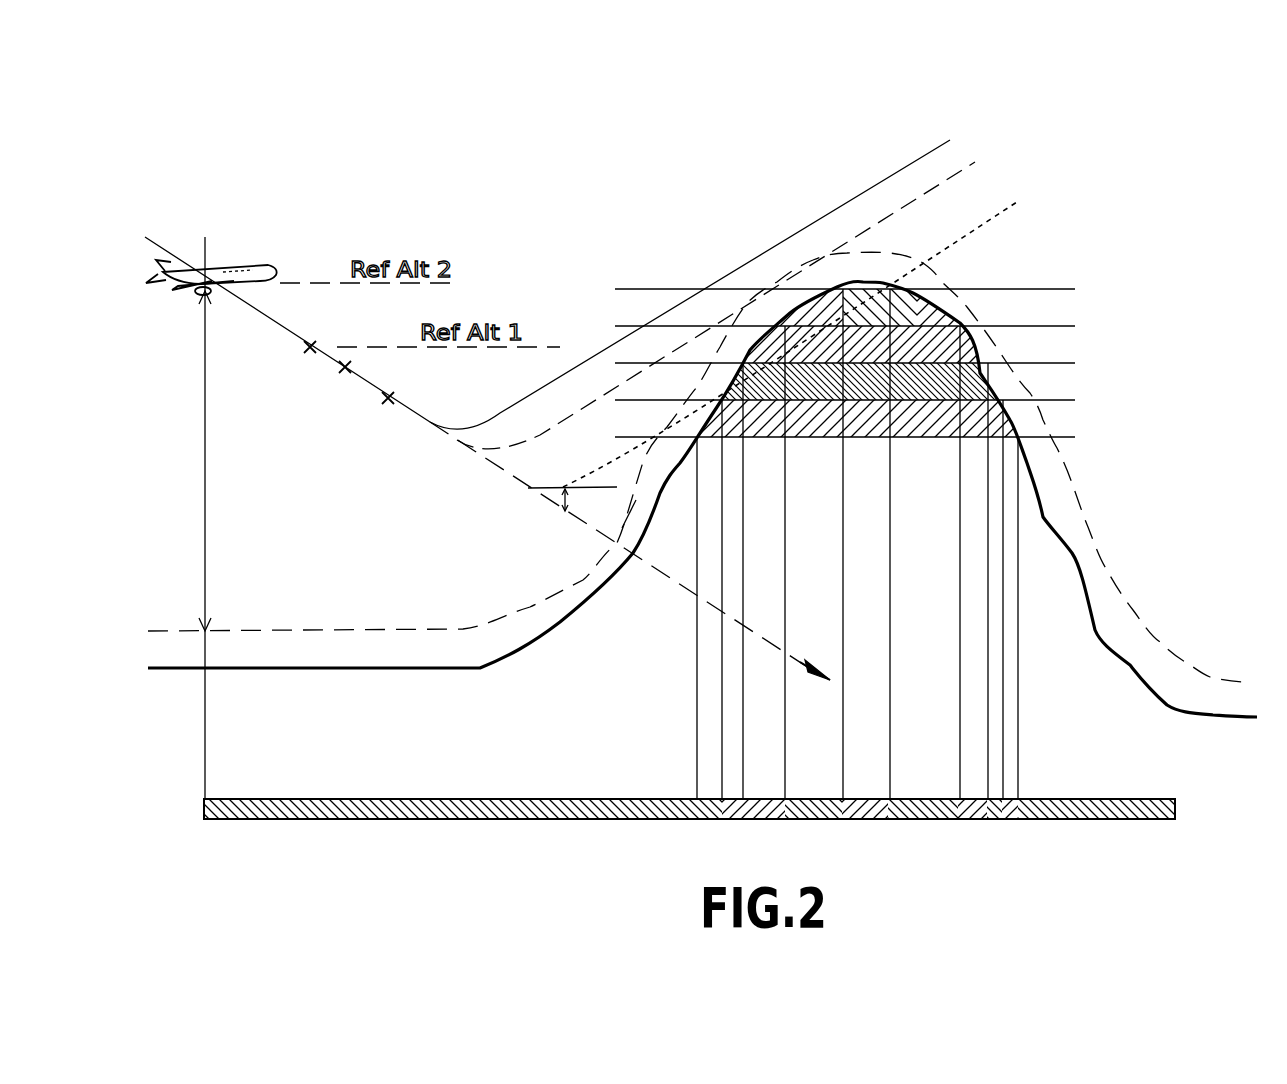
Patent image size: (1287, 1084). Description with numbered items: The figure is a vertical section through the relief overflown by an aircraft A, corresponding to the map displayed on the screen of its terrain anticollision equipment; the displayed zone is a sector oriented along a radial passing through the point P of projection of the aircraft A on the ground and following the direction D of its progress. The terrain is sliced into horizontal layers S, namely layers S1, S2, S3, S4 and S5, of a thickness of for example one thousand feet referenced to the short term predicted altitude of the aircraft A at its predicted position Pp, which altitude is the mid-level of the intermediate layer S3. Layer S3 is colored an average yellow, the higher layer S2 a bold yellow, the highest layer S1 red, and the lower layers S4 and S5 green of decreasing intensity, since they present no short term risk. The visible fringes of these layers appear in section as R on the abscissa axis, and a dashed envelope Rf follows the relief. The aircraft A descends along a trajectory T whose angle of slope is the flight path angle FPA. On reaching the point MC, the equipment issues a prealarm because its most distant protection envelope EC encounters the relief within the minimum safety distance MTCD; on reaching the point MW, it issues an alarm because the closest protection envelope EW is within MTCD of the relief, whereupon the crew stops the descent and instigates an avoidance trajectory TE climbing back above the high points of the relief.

The aircraft A is at (246, 262).
The predicted position Pp is at (311, 343).
The prealarm point MC is at (323, 378).
The alarm point MW is at (363, 408).
The avoidance trajectory TE is at (882, 180).
The closest protection envelope EW is at (944, 183).
The most distant protection envelope EC is at (982, 226).
The trajectory T is at (676, 582).
The direction of progress D is at (813, 656).
The flight path angle FPA is at (582, 507).
The horizontal layers S is at (845, 351).
The horizontal layer S1 is at (849, 532).
The horizontal layer S2 is at (872, 549).
The intermediate horizontal layer S3 is at (865, 566).
The horizontal layer S4 is at (862, 586).
The horizontal layer S5 is at (857, 605).
The display of visible fringes R is at (1177, 808).
The filtered terrain relief envelope Rf is at (1130, 665).
The minimum safety margin distance MTCD is at (205, 530).
The point of projection on the ground P is at (203, 825).